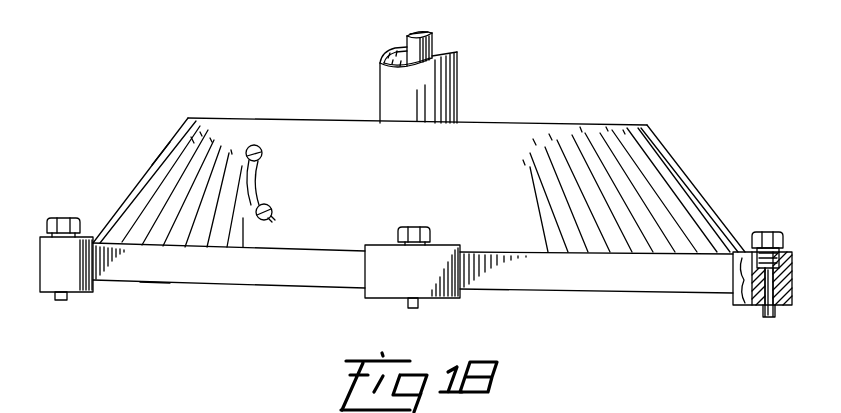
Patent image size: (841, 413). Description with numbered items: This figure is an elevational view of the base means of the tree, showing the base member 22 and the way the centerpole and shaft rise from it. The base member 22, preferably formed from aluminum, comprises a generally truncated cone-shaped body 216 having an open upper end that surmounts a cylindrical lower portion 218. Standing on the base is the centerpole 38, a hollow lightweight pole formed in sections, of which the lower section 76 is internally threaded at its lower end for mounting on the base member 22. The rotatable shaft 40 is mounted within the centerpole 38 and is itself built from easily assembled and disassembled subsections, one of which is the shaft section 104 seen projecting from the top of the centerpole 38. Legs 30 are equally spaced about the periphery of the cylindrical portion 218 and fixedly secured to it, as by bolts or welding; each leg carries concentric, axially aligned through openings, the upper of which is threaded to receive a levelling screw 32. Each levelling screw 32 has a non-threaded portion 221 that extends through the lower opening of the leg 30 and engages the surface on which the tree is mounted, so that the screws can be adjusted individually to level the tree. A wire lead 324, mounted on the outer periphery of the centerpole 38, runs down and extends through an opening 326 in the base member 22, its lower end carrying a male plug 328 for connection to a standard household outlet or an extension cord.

The base member 22 is at (687, 156).
The truncated cone-shaped body 216 is at (149, 181).
The cylindrical lower portion 218 is at (153, 283).
The centerpole 38 is at (466, 77).
The lower section of centerpole 76 is at (382, 62).
The rotatable shaft 40 is at (440, 40).
The shaft section 104 is at (410, 38).
The wire lead 324 is at (259, 177).
The opening 326 is at (260, 152).
The male plug 328 is at (272, 207).
The legs 30 is at (46, 280).
The levelling screws 32 is at (64, 224).
The non-threaded portion 221 is at (57, 300).